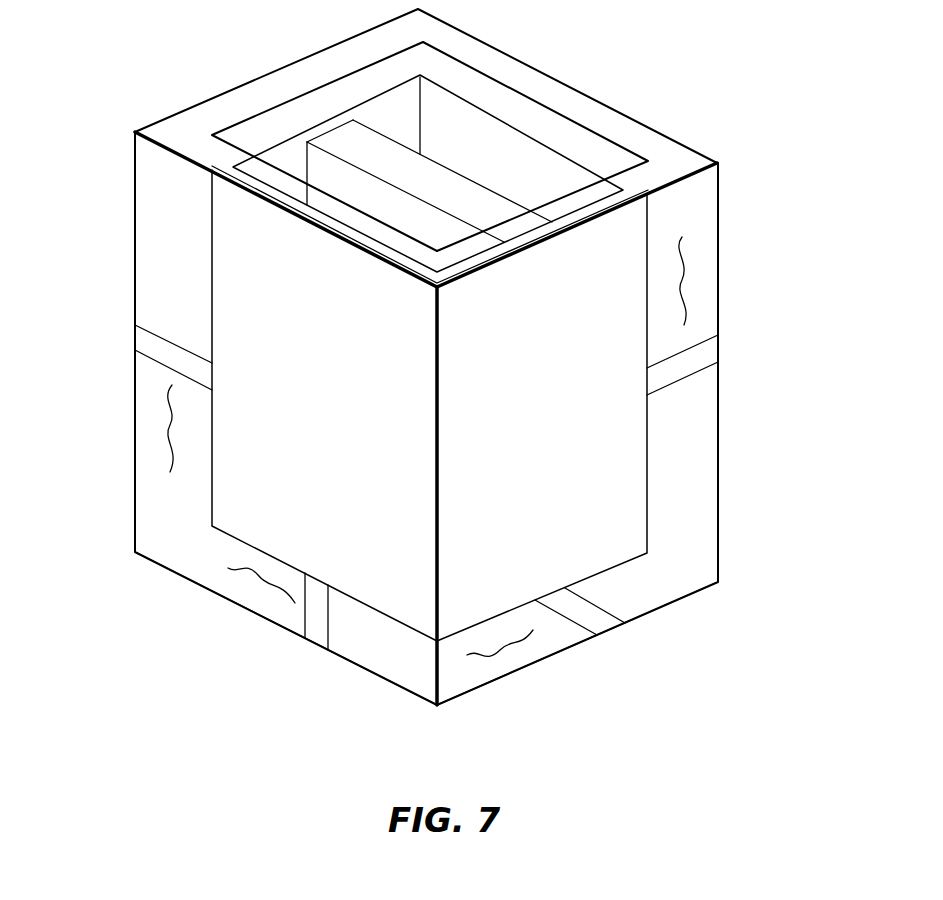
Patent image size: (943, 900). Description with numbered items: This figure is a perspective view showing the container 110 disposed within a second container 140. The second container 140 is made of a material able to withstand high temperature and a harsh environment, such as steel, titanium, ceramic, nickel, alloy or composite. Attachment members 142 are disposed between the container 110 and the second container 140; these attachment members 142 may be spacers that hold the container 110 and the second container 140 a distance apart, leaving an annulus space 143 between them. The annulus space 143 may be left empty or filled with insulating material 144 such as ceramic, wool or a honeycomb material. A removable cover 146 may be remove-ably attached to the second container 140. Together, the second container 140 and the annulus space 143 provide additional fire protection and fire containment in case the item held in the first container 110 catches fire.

The container 110 is at (590, 437).
The second container 140 is at (720, 500).
The attachment members 142 is at (162, 366).
The annulus space 143 is at (175, 237).
The insulating material 144 is at (172, 442).
The removable cover 146 is at (517, 72).